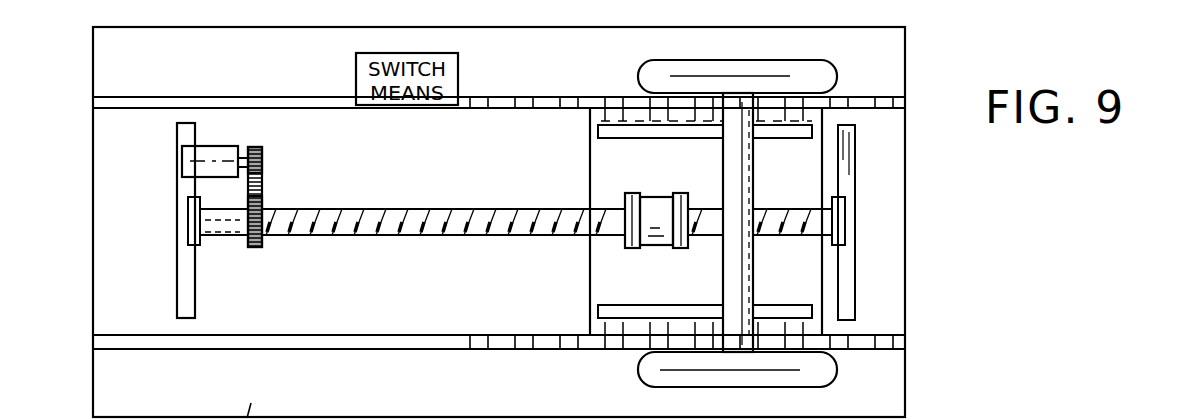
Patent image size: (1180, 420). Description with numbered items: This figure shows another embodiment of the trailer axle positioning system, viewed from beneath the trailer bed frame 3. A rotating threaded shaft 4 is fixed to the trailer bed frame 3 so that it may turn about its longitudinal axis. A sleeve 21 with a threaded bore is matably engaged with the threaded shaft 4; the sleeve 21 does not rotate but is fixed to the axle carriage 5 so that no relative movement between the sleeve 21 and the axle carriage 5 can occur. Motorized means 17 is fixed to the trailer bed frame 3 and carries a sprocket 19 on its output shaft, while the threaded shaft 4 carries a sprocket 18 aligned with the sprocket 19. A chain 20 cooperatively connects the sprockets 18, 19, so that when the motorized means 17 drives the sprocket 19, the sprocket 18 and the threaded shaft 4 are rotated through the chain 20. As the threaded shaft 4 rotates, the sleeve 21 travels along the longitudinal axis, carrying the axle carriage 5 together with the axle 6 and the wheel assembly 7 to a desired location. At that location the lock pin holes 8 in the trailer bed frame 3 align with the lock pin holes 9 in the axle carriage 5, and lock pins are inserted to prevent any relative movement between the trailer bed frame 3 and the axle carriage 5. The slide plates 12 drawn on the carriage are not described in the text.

The trailer bed frame 3 is at (326, 100).
The threaded shaft 4 is at (448, 237).
The axle carriage 5 is at (606, 176).
The axle 6 is at (742, 290).
The wheel assembly 7 is at (666, 362).
The lock pin holes 8 is at (522, 100).
The lock pin holes 9 is at (650, 110).
The slide plates 12 is at (777, 133).
The motorized means 17 is at (200, 157).
The sprocket 18 is at (254, 250).
The sprocket 19 is at (262, 150).
The chain 20 is at (262, 184).
The sleeve 21 is at (657, 241).